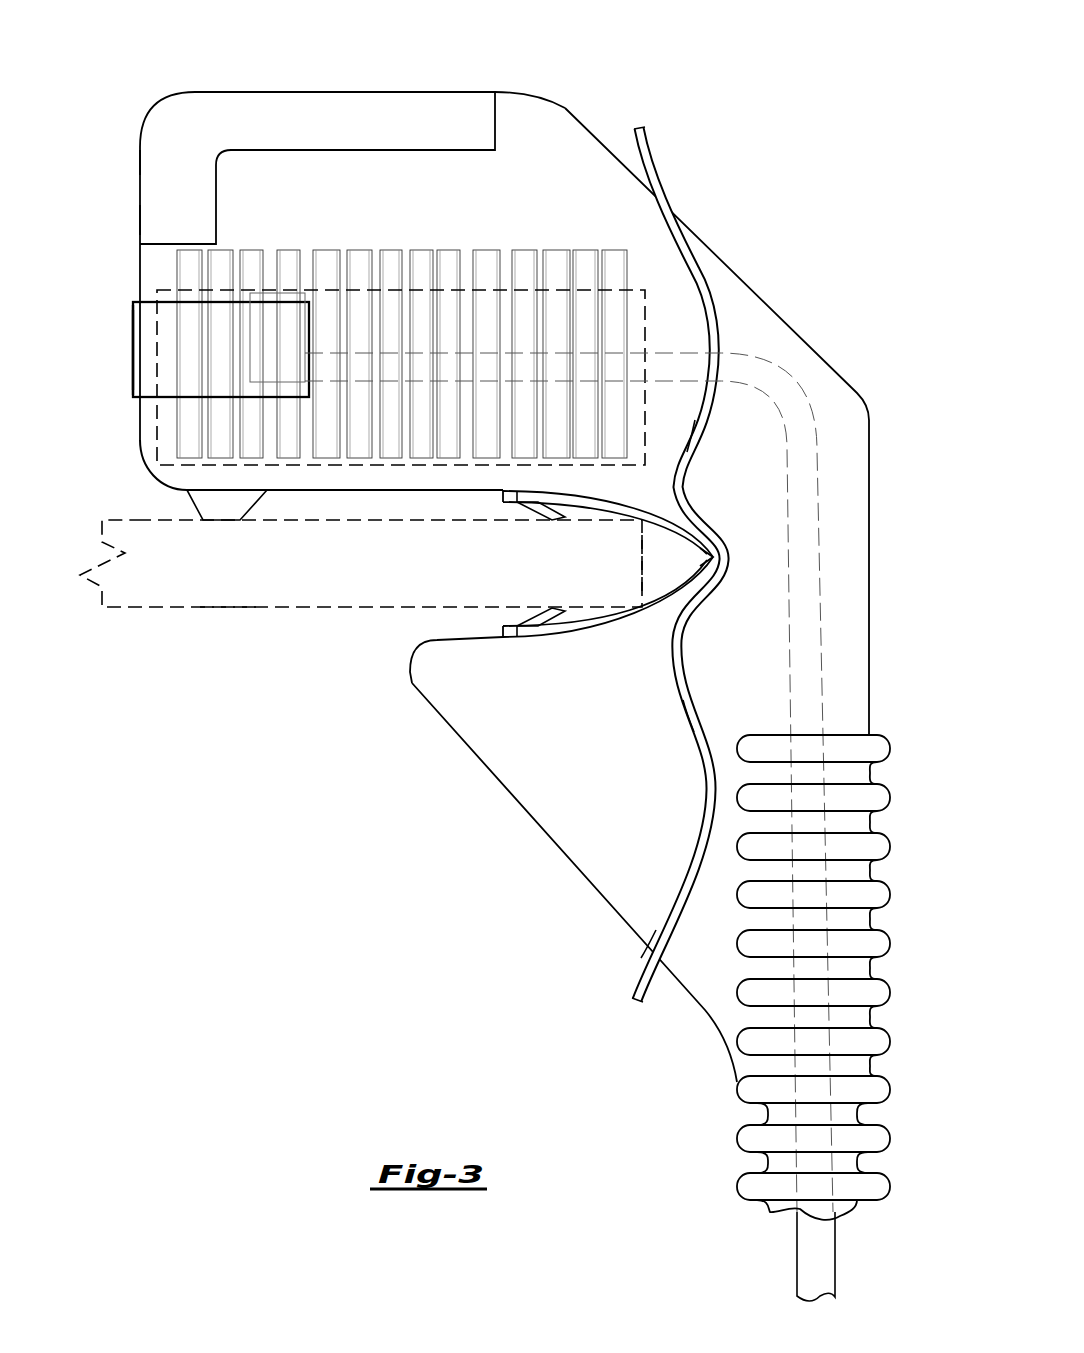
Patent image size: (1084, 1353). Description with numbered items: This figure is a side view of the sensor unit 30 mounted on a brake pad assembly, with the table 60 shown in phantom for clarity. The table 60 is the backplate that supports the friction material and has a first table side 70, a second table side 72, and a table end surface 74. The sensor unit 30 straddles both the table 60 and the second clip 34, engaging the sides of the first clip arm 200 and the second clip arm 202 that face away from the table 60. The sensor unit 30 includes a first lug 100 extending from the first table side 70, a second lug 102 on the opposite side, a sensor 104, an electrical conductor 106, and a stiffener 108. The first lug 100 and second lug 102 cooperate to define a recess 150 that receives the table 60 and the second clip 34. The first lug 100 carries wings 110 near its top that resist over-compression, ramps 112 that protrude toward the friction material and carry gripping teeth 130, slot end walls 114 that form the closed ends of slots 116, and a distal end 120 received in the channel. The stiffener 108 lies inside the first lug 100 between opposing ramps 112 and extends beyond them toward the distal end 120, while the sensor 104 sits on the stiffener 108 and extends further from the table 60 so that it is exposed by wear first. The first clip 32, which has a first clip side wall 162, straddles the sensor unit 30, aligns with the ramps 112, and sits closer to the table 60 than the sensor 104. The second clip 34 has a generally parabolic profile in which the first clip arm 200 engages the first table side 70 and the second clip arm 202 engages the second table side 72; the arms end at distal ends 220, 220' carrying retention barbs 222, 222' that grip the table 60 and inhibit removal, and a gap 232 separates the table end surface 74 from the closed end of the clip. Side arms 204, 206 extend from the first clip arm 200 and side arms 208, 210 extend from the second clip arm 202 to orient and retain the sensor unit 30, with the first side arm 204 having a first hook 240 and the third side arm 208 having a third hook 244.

The sensor unit 30 is at (860, 391).
The first clip 32 is at (133, 322).
The second clip 34 is at (692, 444).
The table 60 is at (100, 563).
The first table side 70 is at (137, 520).
The second table side 72 is at (228, 607).
The table end surface 74 is at (642, 570).
The first lug 100 is at (518, 95).
The second lug 102 is at (410, 683).
The sensor 104 is at (250, 332).
The electrical conductor 106 is at (797, 1267).
The stiffener 108 is at (643, 310).
The wing 110 is at (203, 92).
The ramp 112 is at (527, 250).
The slot end wall 114 is at (140, 163).
The slot 116 is at (497, 193).
The distal end 120 is at (140, 220).
The teeth 130 is at (217, 430).
The recess 150 is at (428, 622).
The first clip side wall 162 is at (147, 380).
The first clip arm 200 is at (603, 505).
The second clip arm 202 is at (603, 625).
The first side arm 204 is at (667, 203).
The second side arm 206 is at (653, 160).
The third side arm 208 is at (690, 725).
The fourth side arm 210 is at (642, 952).
The distal end 220 is at (489, 525).
The distal end 220' is at (489, 601).
The retention barb 222 is at (547, 531).
The retention barb 222' is at (550, 596).
The gap 232 is at (706, 561).
The first hook 240 is at (633, 140).
The third hook 244 is at (630, 998).